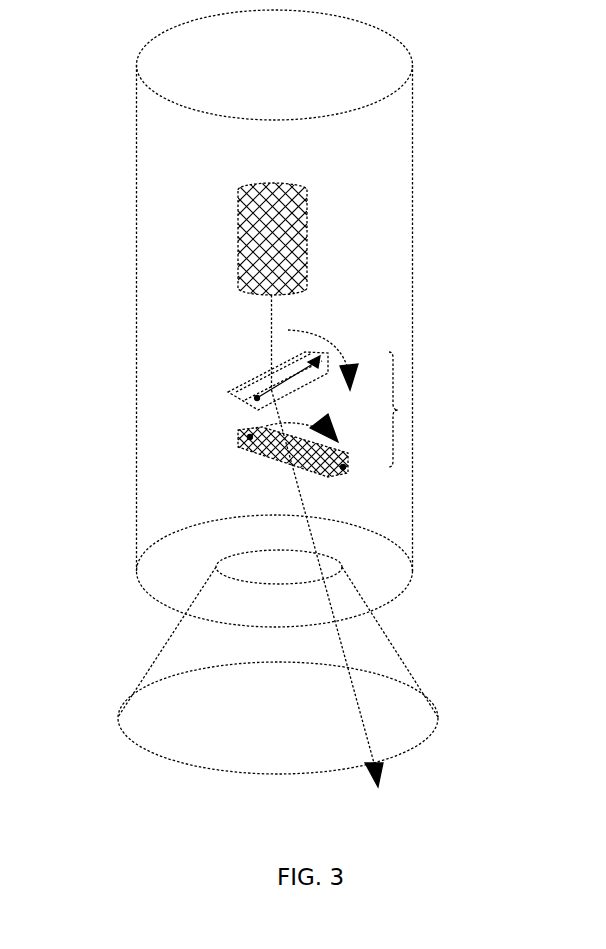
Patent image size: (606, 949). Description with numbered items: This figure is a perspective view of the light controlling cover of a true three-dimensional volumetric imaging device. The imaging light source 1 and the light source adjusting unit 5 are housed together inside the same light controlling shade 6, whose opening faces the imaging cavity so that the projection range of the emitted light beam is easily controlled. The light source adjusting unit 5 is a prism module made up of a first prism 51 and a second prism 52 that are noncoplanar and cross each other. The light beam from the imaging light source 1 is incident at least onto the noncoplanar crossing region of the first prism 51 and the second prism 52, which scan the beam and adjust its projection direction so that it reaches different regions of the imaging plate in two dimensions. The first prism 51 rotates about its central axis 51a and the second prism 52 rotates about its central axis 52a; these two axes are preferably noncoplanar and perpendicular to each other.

The imaging light source 1 is at (237, 193).
The light source adjusting unit 5 is at (421, 409).
The first prism 51 is at (252, 373).
The central axis of a first prism 51a is at (342, 348).
The second prism 52 is at (246, 427).
The central axis of a second prism 52a is at (205, 427).
The light controlling shade 6 is at (411, 132).